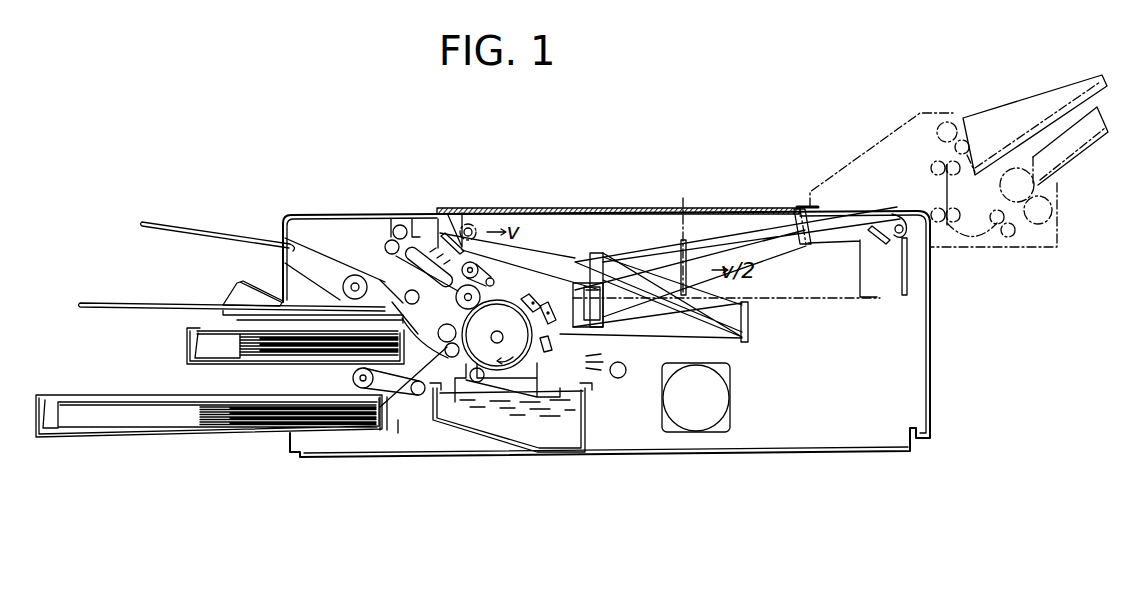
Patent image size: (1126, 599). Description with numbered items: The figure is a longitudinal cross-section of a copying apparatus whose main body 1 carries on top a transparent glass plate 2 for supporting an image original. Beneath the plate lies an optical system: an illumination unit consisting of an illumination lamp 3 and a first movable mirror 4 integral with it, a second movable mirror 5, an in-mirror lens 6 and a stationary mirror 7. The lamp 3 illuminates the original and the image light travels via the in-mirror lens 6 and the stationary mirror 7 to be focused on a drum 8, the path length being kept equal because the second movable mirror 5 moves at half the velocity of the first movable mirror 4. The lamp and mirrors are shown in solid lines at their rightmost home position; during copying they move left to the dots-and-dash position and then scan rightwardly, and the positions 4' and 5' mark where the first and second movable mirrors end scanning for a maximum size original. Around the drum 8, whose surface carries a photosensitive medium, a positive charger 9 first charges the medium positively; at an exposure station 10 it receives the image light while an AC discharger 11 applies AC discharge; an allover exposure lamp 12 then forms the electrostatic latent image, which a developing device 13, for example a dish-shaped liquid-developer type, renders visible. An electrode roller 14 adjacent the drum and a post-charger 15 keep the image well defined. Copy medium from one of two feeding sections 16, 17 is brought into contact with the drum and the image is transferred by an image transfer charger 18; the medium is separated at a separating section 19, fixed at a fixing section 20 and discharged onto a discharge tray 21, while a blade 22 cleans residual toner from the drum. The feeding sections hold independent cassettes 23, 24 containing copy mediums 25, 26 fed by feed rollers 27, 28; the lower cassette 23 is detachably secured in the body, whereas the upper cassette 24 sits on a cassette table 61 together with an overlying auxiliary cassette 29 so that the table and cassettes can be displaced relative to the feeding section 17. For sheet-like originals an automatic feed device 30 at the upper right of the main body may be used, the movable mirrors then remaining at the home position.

The main body 1 is at (483, 457).
The transparent glass plate 2 is at (727, 206).
The illumination lamp 3 is at (473, 227).
The first movable mirror 4 is at (665, 229).
The scanning termination position of first movable mirror 4' is at (810, 252).
The second movable mirror 5 is at (791, 254).
The scanning termination position of second movable mirror 5' is at (726, 285).
The in-mirror lens 6 is at (582, 262).
The stationary mirror 7 is at (748, 319).
The drum 8 is at (510, 313).
The positive charger 9 is at (552, 305).
The exposure station 10 is at (553, 349).
The AC discharger 11 is at (603, 303).
The allover exposure lamp 12 is at (626, 367).
The developing device 13 is at (580, 415).
The electrode roller 14 is at (474, 373).
The post-charger 15 is at (458, 402).
The feeding section 16 is at (390, 398).
The feeding section 17 is at (387, 279).
The image transfer charger 18 is at (447, 317).
The separating section 19 is at (488, 290).
The fixing section 20 is at (424, 232).
The discharge tray 21 is at (327, 272).
The blade 22 is at (529, 298).
The lower cassette 23 is at (193, 437).
The upper cassette 24 is at (212, 369).
The copy mediums 25 is at (253, 409).
The copy mediums 26 is at (267, 334).
The feed roller 27 is at (353, 379).
The feed roller 28 is at (342, 276).
The auxiliary cassette 29 is at (243, 292).
The automatic feed device 30 is at (862, 165).
The cassette table 61 is at (267, 292).